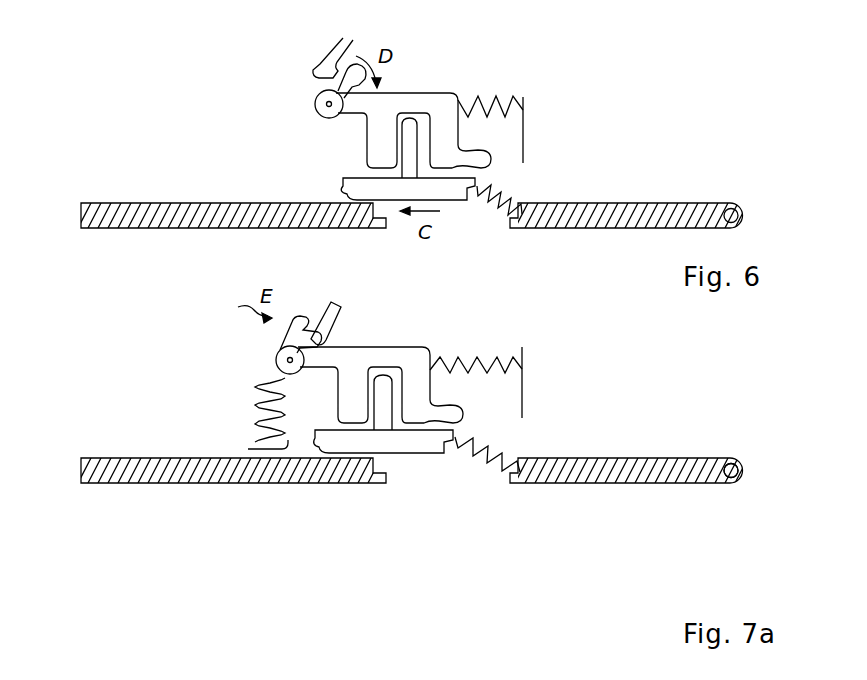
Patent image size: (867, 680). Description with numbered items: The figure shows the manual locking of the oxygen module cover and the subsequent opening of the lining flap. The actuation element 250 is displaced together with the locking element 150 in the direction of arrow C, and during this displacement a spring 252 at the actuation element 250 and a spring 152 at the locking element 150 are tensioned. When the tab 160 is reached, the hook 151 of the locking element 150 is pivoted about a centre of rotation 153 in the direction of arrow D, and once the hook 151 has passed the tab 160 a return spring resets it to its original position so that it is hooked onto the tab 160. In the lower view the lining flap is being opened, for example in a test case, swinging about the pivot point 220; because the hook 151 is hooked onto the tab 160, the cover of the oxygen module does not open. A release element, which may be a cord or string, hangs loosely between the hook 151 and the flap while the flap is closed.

In FIG. 6, the locking element 150 is at (417, 100).
In FIG. 7A, the locking element 150 is at (365, 357).
In FIG. 6, the hook 151 is at (326, 88).
In FIG. 7A, the hook 151 is at (277, 359).
In FIG. 6, the spring 152 is at (480, 107).
In FIG. 7A, the spring 152 is at (476, 382).
In FIG. 6, the centre of rotation 153 is at (318, 113).
In FIG. 6, the tab 160 is at (315, 65).
In FIG. 7A, the tab 160 is at (328, 308).
In FIG. 6, the actuation element 250 is at (343, 180).
In FIG. 7A, the actuation element 250 is at (383, 414).
In FIG. 6, the spring 252 is at (507, 193).
In FIG. 7A, the spring 252 is at (507, 453).
In FIG. 7A, the pivot point 220 is at (729, 477).